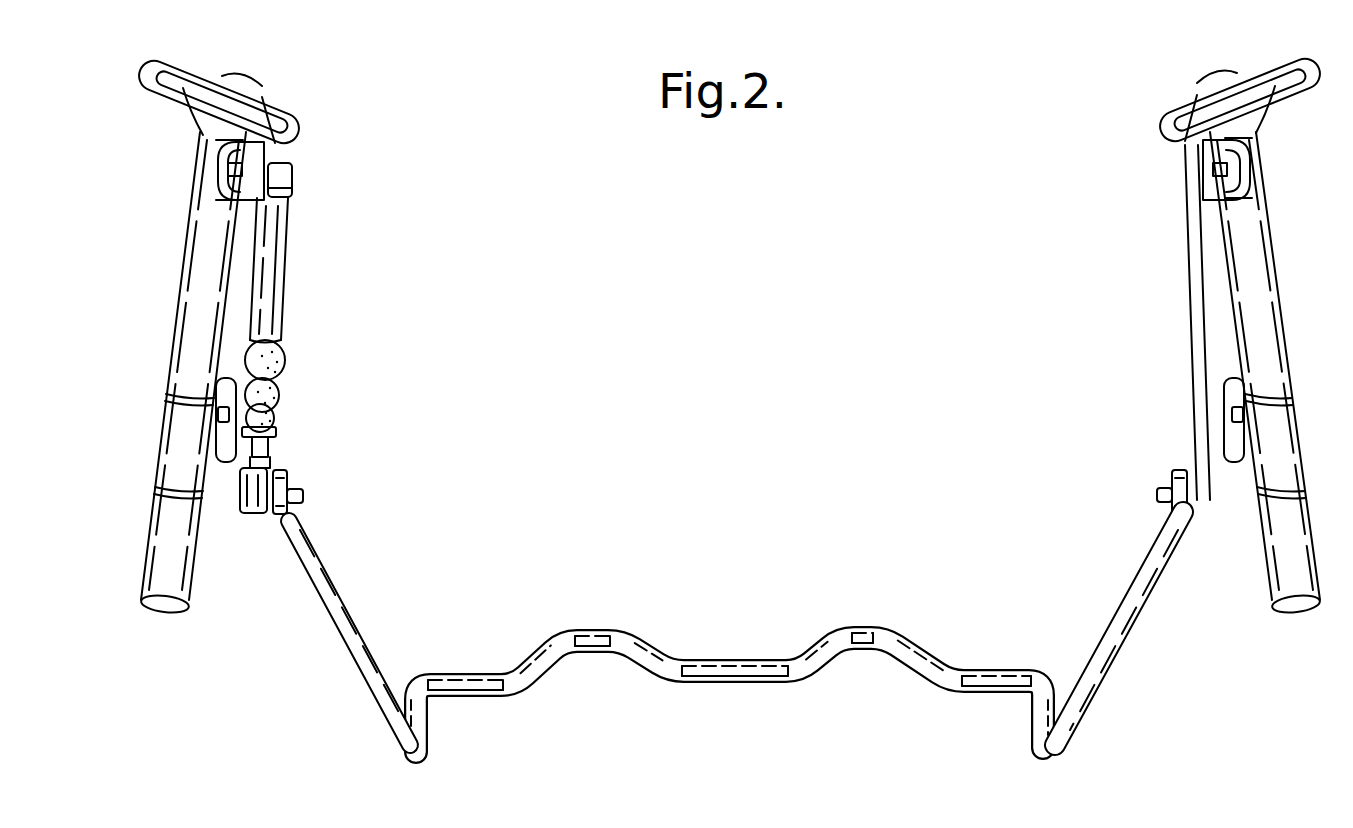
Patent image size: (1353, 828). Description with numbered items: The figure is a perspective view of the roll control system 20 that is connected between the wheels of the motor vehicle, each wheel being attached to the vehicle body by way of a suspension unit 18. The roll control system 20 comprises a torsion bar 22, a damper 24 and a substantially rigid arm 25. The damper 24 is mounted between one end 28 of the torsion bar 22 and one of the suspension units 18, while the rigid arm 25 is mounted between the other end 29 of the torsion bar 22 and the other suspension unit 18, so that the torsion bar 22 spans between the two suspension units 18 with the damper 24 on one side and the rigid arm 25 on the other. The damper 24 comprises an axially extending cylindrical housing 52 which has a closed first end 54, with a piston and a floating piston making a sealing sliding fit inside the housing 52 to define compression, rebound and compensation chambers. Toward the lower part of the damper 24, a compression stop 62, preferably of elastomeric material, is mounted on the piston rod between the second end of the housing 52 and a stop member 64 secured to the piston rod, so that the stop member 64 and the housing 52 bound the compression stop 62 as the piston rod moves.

The roll control system 20 is at (955, 162).
The suspension unit 18 is at (182, 302).
The torsion bar 22 is at (738, 662).
The damper 24 is at (315, 338).
The rigid arm 25 is at (1164, 337).
The end of torsion bar 28 is at (282, 520).
The other end of torsion bar 29 is at (1180, 523).
The cylindrical housing 52 is at (287, 270).
The closed first end 54 is at (287, 173).
The compression stop 62 is at (283, 395).
The stop member 64 is at (276, 431).